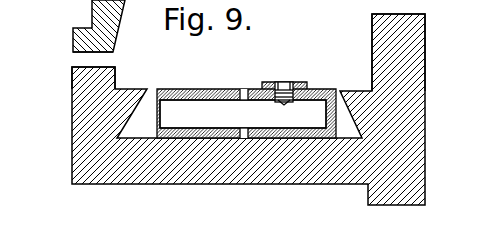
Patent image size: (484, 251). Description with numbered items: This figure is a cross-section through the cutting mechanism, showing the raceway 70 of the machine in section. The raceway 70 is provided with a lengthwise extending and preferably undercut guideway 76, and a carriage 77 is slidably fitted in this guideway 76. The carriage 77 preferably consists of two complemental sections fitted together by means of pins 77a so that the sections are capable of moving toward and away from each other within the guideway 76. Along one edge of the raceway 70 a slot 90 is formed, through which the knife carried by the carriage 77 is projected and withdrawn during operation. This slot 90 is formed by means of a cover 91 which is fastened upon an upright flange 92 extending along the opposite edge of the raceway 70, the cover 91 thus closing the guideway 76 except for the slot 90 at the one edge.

The raceway 70 is at (415, 117).
The guideway 76 is at (132, 113).
The carriage 77 is at (202, 92).
The pins 77a is at (243, 114).
The slot 90 is at (83, 60).
The cover 91 is at (100, 13).
The upright flange 92 is at (380, 36).